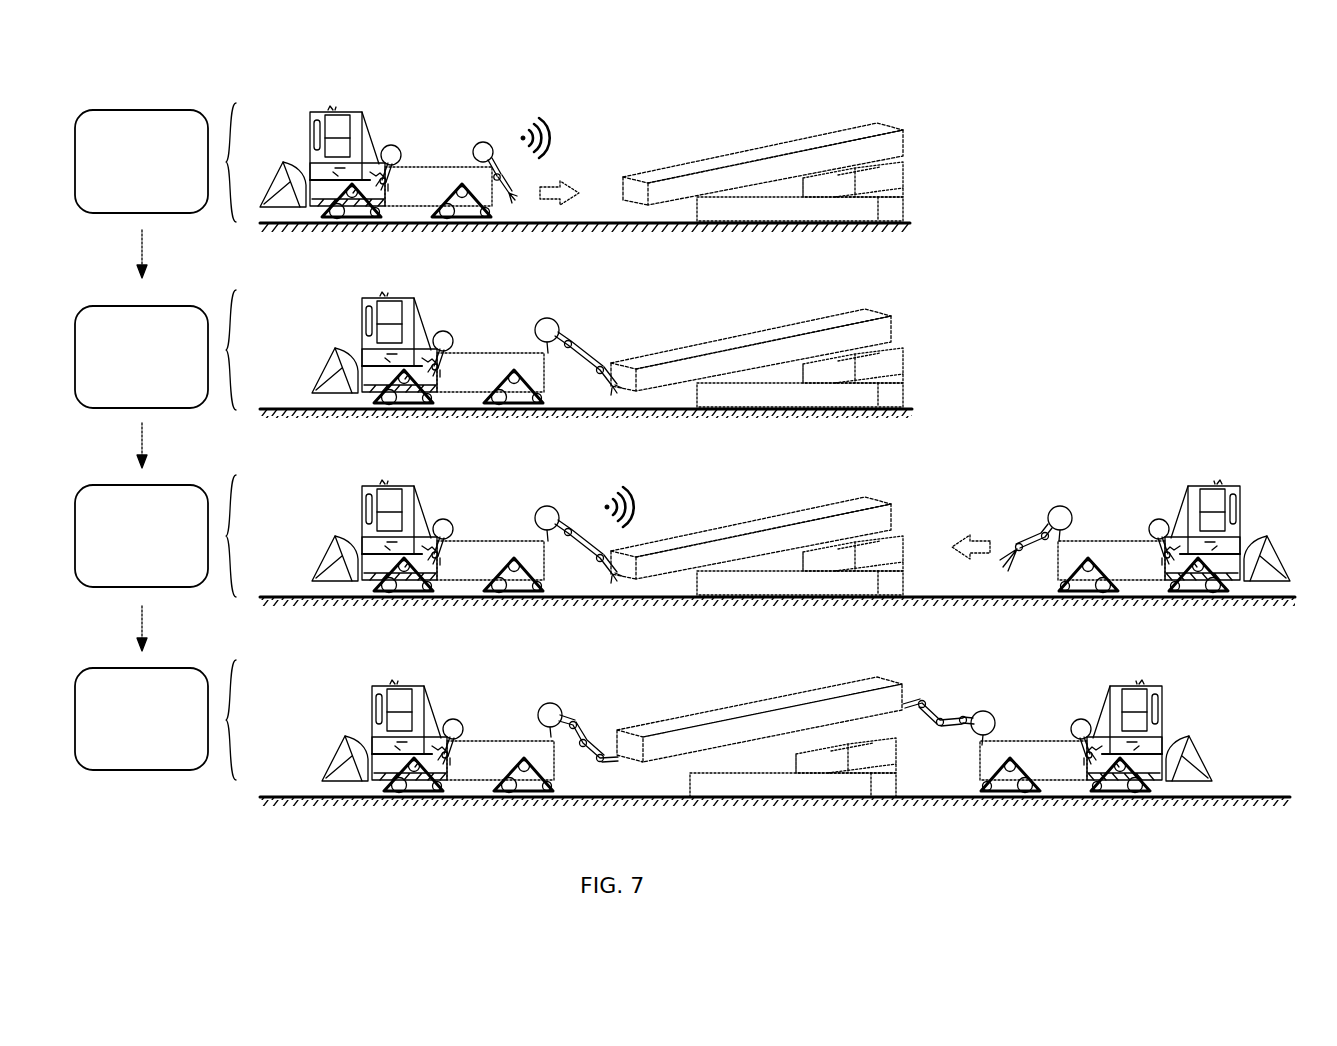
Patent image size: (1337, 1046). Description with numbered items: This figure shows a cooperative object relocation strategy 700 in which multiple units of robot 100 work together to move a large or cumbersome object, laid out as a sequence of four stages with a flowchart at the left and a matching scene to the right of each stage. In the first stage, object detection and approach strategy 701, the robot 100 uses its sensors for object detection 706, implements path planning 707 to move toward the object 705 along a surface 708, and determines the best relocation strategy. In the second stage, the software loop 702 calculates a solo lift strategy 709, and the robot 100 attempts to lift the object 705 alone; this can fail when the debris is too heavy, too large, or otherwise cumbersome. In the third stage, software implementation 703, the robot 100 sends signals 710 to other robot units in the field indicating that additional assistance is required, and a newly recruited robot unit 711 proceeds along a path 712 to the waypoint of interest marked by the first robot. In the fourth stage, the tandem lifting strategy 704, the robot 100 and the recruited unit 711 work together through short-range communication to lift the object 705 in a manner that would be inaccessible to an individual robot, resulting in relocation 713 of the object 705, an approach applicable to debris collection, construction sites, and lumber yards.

The cooperative object relocation strategy 700 is at (180, 68).
The object detection and approach strategy 701 is at (141, 161).
The solo lift software loop 702 is at (141, 357).
The assistance signaling software implementation 703 is at (141, 536).
The tandem lifting strategy 704 is at (141, 719).
The robot 100 is at (434, 150).
The object 705 is at (745, 140).
The object detection 706 is at (526, 120).
The path planning 707 is at (568, 180).
The surface 708 is at (915, 218).
The solo lift strategy 709 is at (605, 352).
The signals 710 is at (600, 495).
The recruited robot unit 711 is at (1120, 510).
The path 712 is at (968, 525).
The relocation 713 is at (685, 705).